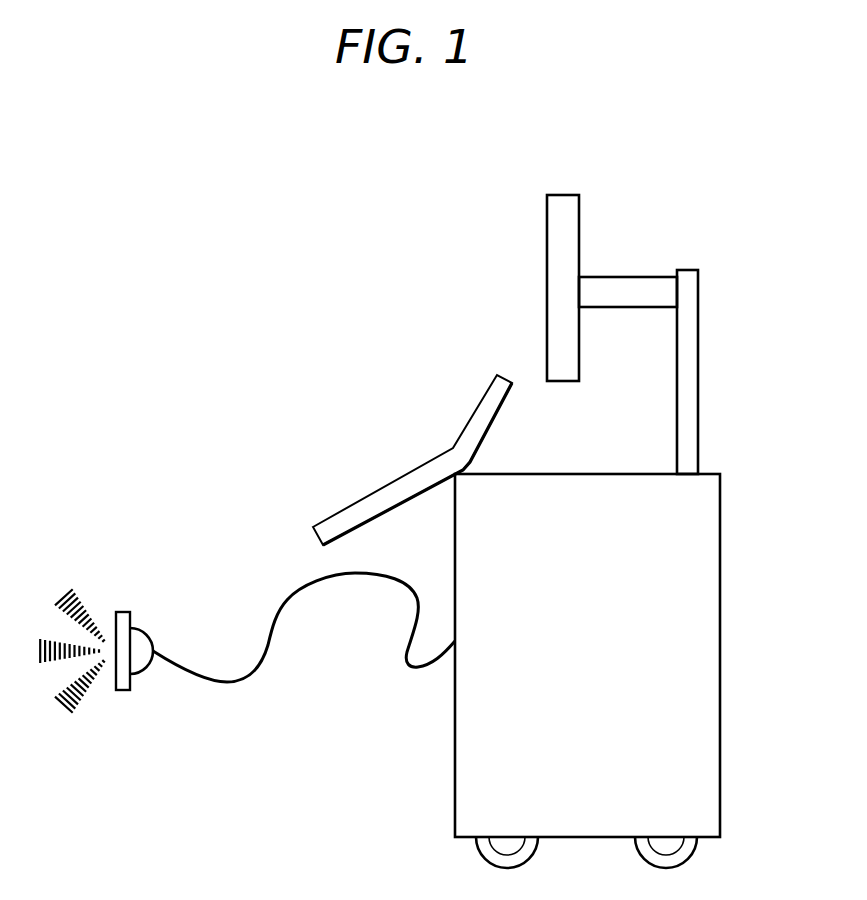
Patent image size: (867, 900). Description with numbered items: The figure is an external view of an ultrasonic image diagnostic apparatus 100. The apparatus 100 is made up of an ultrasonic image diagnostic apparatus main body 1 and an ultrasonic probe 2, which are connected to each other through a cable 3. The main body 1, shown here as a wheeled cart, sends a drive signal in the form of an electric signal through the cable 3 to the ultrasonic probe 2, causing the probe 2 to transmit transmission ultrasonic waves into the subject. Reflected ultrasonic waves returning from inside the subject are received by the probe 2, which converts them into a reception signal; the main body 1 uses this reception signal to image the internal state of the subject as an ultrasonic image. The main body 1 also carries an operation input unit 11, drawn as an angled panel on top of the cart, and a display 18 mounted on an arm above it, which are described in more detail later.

The ultrasonic image diagnostic apparatus 100 is at (216, 234).
The ultrasonic image diagnostic apparatus main body 1 is at (721, 594).
The ultrasonic probe 2 is at (130, 616).
The cable 3 is at (270, 655).
The operation input unit 11 is at (472, 414).
The display 18 is at (547, 266).